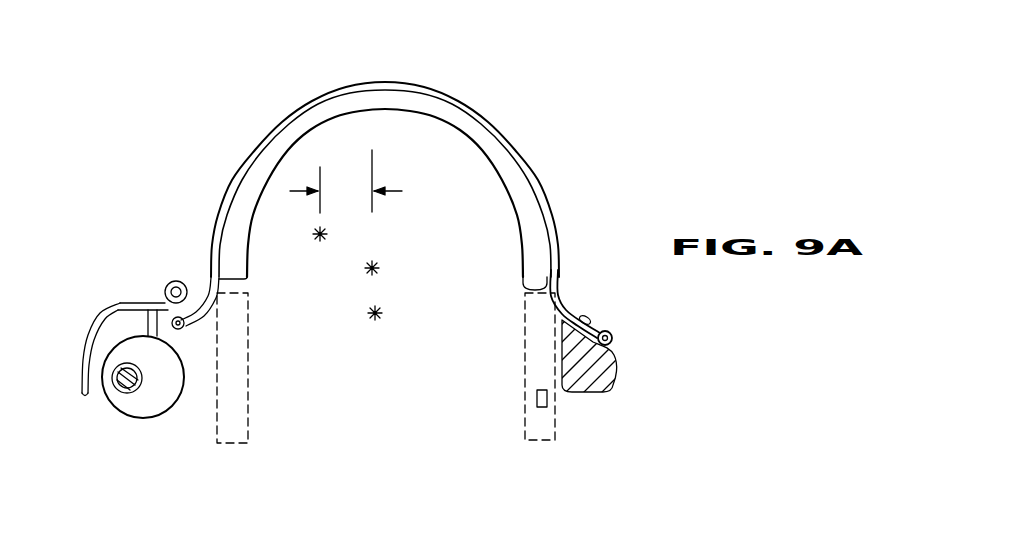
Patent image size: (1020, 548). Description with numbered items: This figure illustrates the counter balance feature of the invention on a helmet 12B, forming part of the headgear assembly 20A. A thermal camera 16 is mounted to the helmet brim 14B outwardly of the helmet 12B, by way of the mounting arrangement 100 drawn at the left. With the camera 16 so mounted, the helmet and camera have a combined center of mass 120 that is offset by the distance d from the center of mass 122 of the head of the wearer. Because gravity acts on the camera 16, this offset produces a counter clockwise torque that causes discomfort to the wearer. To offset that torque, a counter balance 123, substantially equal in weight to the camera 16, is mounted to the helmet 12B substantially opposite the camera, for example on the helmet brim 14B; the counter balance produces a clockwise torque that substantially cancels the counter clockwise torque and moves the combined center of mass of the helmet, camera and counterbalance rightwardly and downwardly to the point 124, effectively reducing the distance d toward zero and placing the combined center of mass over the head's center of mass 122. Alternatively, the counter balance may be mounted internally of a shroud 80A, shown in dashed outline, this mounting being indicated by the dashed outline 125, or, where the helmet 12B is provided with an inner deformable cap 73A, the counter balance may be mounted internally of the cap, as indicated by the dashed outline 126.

The helmet 12B is at (476, 113).
The headset 20A is at (722, 0).
The helmet brim 14B is at (189, 283).
The ear hook assembly 100 is at (114, 303).
The thermal camera 16 is at (144, 420).
The shroud 80A is at (237, 445).
The counter balance mounted internally of shroud 125 is at (545, 410).
The counter balance 123 is at (612, 390).
The counter balance mounted internally of inner deformable cap 126 is at (542, 281).
The inner deformable cap 73A is at (520, 254).
The center of mass of the head 122 is at (380, 313).
The point 124 is at (378, 264).
The combined center of mass 120 is at (316, 234).
The distance d is at (346, 181).